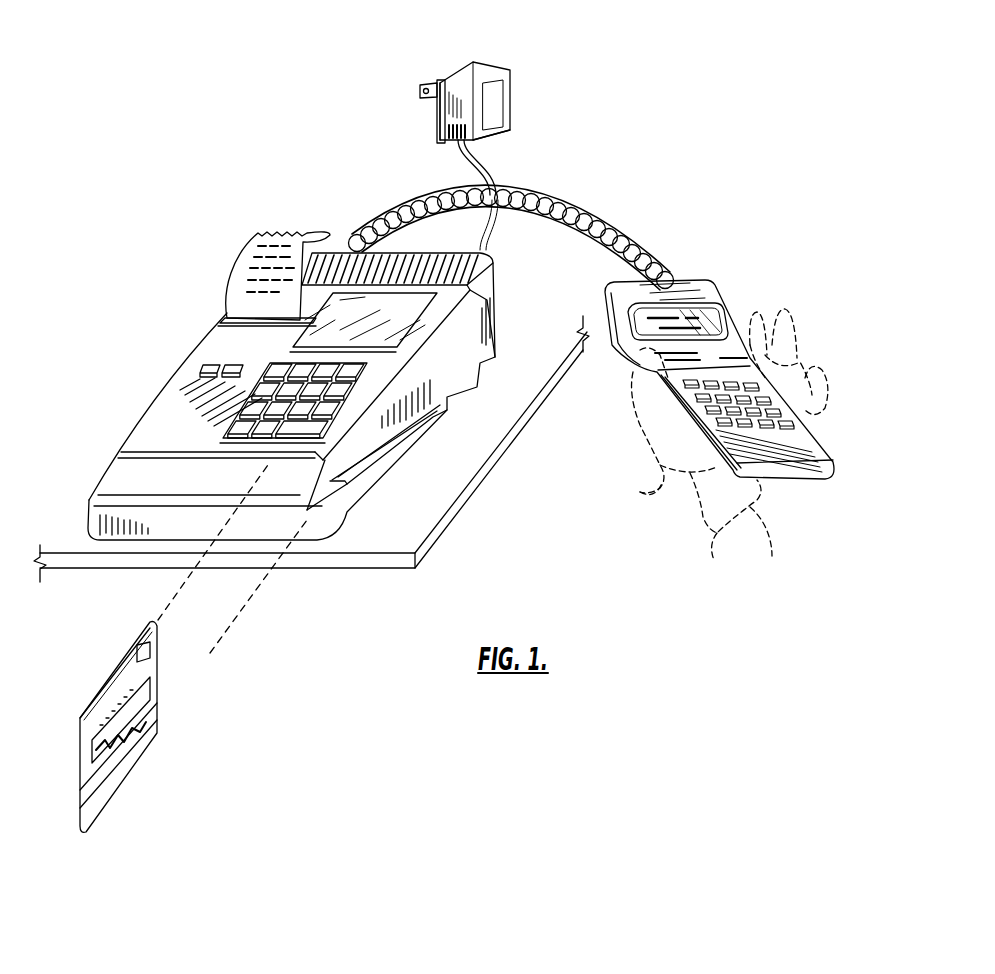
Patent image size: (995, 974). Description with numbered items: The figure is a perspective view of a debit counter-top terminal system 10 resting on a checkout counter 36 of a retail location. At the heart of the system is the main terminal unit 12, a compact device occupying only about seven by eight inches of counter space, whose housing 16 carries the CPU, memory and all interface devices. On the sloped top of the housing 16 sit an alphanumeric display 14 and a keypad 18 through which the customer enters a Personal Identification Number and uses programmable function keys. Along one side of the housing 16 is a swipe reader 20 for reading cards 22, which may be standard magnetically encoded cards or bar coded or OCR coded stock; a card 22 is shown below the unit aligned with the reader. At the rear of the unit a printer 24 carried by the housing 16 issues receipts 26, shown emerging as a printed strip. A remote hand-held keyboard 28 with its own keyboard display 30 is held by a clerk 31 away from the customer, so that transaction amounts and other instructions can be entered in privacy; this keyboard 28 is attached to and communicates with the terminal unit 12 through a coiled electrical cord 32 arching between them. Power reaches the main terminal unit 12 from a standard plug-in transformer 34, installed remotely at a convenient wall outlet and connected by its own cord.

The system 10 is at (630, 165).
The main terminal unit 12 is at (259, 394).
The alphanumeric display 14 is at (372, 326).
The housing 16 is at (97, 481).
The keypad 18 is at (200, 388).
The swipe reader 20 is at (352, 498).
The cards 22 is at (130, 760).
The printer 24 is at (226, 312).
The receipts 26 is at (283, 240).
The remote hand-held keyboard 28 is at (737, 364).
The keyboard display 30 is at (700, 310).
The clerk 31 is at (730, 442).
The coiled electrical cord 32 is at (630, 237).
The plug-in transformer 34 is at (473, 95).
The checkout counter 36 is at (469, 469).